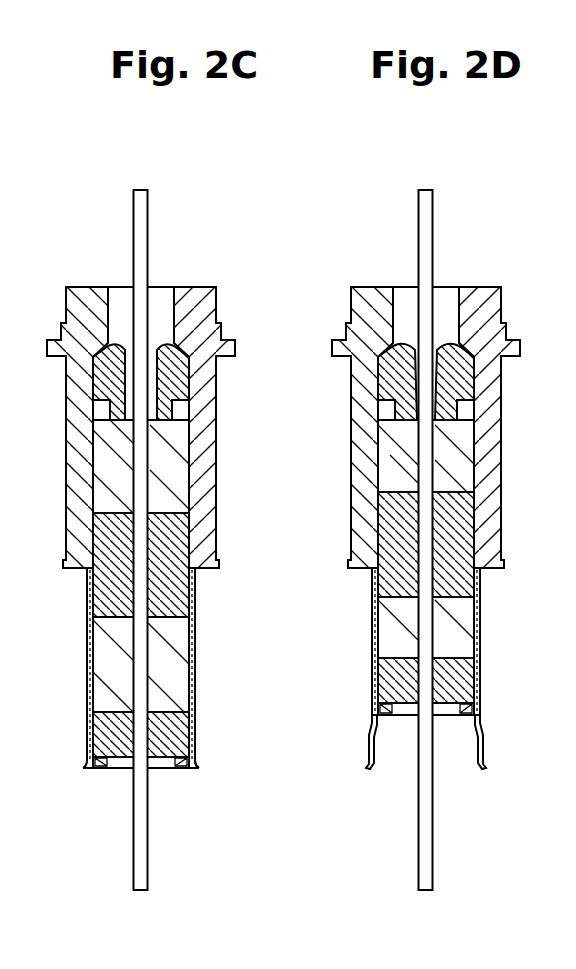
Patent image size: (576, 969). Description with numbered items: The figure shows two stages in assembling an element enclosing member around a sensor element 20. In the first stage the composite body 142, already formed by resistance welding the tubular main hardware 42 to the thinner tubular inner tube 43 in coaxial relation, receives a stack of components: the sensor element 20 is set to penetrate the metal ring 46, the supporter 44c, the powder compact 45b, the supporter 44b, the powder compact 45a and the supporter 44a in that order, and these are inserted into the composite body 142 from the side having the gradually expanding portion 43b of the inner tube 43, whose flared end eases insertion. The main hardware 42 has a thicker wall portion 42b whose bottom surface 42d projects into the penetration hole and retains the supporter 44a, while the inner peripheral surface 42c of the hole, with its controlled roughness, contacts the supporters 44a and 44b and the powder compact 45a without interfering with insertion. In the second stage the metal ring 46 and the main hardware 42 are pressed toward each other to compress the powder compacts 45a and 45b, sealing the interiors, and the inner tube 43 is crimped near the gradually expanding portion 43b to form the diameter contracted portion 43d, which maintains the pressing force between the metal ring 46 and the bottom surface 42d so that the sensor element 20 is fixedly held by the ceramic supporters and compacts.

In FIG. 2C, the composite body 142 is at (193, 200).
In FIG. 2C, the sensor element 20 is at (140, 220).
In FIG. 2D, the sensor element 20 is at (426, 540).
In FIG. 2C, the main hardware 42 is at (197, 297).
In FIG. 2D, the main hardware 42 is at (406, 427).
In FIG. 2D, the thicker wall portion 42b is at (509, 274).
In FIG. 2C, the inner peripheral surface 42c is at (186, 443).
In FIG. 2D, the inner peripheral surface 42c is at (515, 456).
In FIG. 2D, the bottom surface 42d is at (508, 329).
In FIG. 2C, the inner tube 43 is at (87, 648).
In FIG. 2D, the inner tube 43 is at (402, 642).
In FIG. 2C, the gradually expanding portion 43b is at (193, 767).
In FIG. 2D, the diameter contracted portion 43d is at (458, 742).
In FIG. 2C, the supporter 44a is at (103, 377).
In FIG. 2D, the supporter 44a is at (426, 382).
In FIG. 2C, the supporter 44b is at (105, 530).
In FIG. 2D, the supporter 44b is at (426, 544).
In FIG. 2C, the supporter 44c is at (105, 733).
In FIG. 2D, the supporter 44c is at (426, 680).
In FIG. 2C, the powder compact 45a is at (105, 457).
In FIG. 2D, the powder compact 45a is at (386, 456).
In FIG. 2C, the powder compact 45b is at (105, 673).
In FIG. 2D, the powder compact 45b is at (394, 627).
In FIG. 2C, the metal ring 46 is at (99, 763).
In FIG. 2D, the metal ring 46 is at (396, 723).